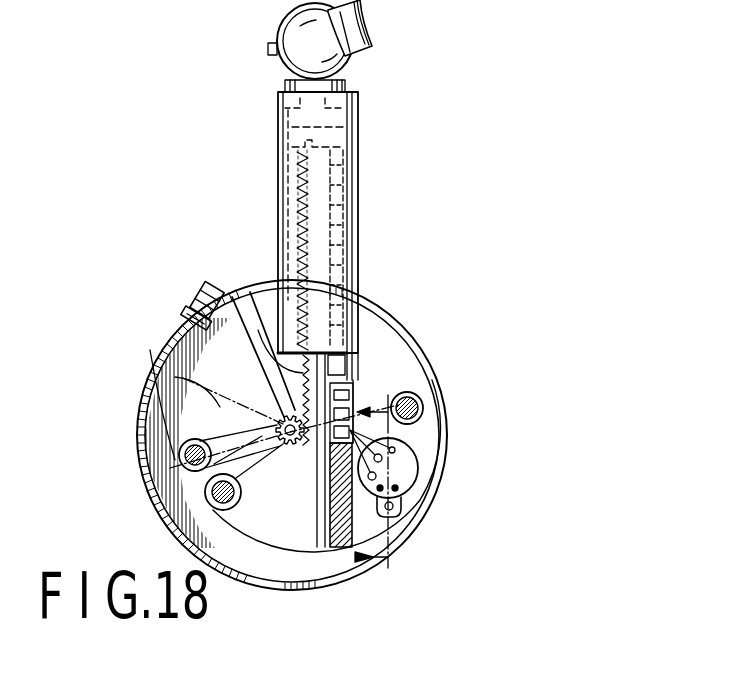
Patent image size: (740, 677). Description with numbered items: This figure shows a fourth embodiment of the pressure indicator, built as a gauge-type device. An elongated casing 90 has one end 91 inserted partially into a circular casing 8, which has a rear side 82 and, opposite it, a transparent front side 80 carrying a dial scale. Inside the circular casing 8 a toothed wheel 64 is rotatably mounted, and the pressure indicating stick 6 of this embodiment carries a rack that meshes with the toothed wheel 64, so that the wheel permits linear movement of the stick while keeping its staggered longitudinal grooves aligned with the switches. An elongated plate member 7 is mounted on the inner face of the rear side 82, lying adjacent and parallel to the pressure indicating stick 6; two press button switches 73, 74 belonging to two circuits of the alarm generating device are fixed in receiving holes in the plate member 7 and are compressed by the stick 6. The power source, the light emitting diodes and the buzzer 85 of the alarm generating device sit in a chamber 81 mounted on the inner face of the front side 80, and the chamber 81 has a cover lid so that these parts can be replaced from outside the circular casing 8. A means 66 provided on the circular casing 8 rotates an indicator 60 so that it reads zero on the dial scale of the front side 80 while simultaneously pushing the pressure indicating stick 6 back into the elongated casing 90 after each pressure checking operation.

The circular casing 8 is at (447, 373).
The elongated casing 90 is at (357, 168).
The end of elongated casing 91 is at (283, 272).
The press button switch 73 is at (353, 362).
The elongated plate member 7 is at (332, 522).
The pressure indicating stick 6 is at (256, 308).
The toothed wheel 64 is at (250, 360).
The means for rotating indicator 66 is at (197, 283).
The indicator 60 is at (220, 414).
The rear side 82 is at (190, 500).
The press button switch 74 is at (262, 464).
The transparent front side 80 is at (445, 438).
The chamber 81 is at (412, 473).
The buzzer 85 is at (404, 514).